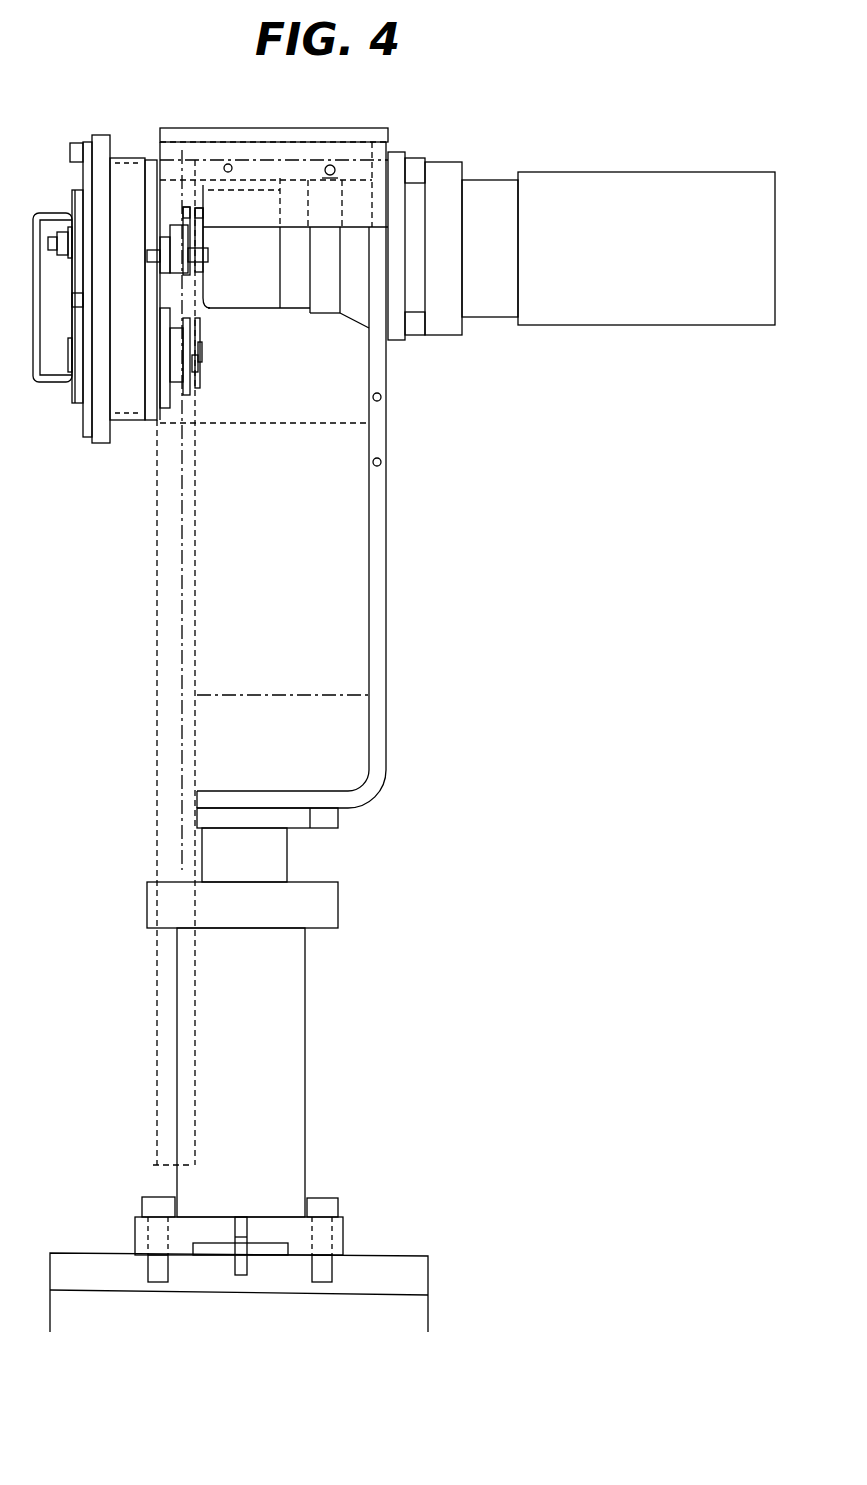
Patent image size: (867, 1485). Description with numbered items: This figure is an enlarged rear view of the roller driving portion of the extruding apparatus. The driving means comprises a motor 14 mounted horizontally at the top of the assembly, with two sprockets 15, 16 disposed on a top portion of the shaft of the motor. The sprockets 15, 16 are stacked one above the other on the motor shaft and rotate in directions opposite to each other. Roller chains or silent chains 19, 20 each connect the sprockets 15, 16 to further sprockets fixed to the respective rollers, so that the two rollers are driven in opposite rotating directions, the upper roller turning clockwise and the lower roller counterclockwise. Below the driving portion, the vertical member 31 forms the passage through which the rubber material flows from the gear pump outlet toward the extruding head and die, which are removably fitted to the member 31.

The motor 14 is at (677, 172).
The sprocket 15 is at (206, 185).
The sprocket 16 is at (198, 318).
The roller chain or silent chain 19 is at (193, 300).
The roller chain or silent chain 20 is at (190, 583).
The member forming the passage 31 is at (260, 1055).